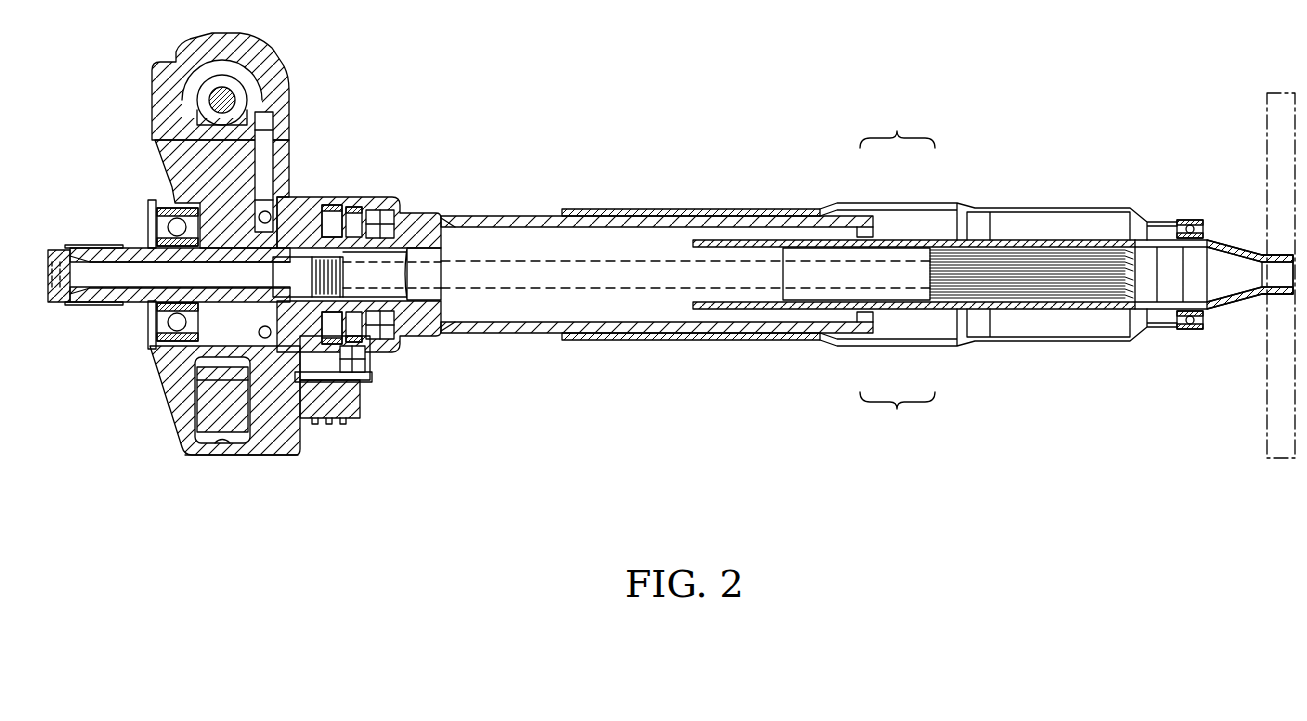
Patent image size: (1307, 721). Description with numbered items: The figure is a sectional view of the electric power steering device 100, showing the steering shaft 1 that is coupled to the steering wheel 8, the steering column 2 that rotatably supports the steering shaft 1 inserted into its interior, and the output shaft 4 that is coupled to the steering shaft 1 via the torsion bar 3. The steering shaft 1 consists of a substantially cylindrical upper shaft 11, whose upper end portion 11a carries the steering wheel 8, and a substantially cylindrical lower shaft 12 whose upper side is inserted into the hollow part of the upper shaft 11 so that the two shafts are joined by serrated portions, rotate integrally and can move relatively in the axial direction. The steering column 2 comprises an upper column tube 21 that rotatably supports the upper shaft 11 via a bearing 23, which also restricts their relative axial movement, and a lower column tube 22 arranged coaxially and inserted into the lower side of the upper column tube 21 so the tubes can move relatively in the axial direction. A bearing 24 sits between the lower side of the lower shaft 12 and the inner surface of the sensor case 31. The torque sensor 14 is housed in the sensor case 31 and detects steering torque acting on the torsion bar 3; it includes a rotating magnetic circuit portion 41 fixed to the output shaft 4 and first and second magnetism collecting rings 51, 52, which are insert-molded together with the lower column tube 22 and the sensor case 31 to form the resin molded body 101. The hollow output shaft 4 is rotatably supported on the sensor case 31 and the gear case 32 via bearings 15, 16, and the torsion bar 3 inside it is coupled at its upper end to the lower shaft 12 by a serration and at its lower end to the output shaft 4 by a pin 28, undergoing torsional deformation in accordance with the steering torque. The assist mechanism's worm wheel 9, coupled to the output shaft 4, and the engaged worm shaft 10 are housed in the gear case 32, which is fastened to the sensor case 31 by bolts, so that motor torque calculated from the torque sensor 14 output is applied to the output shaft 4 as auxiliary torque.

The steering shaft 1 is at (897, 129).
The steering column 2 is at (897, 416).
The torsion bar 3 is at (122, 280).
The output shaft 4 is at (122, 247).
The steering wheel 8 is at (1265, 418).
The worm wheel 9 is at (200, 405).
The worm shaft 10 is at (232, 97).
The upper shaft 11 is at (918, 243).
The upper end portion 11a is at (1285, 296).
The lower shaft 12 is at (878, 272).
The torque sensor 14 is at (355, 425).
The bearing 15 is at (268, 196).
The bearing 16 is at (172, 210).
The upper column tube 21 is at (922, 348).
The lower column tube 22 is at (860, 331).
The bearing 23 is at (1192, 220).
The bearing 24 is at (443, 214).
The pin 28 is at (62, 300).
The sensor case 31 is at (381, 208).
The gear case 32 is at (218, 457).
The rotating magnetic circuit portion 41 is at (367, 356).
The first magnetism collecting ring 51 is at (356, 207).
The second magnetism collecting ring 52 is at (332, 206).
The electric power steering device 100 is at (1143, 172).
The resin molded body 101 is at (411, 214).